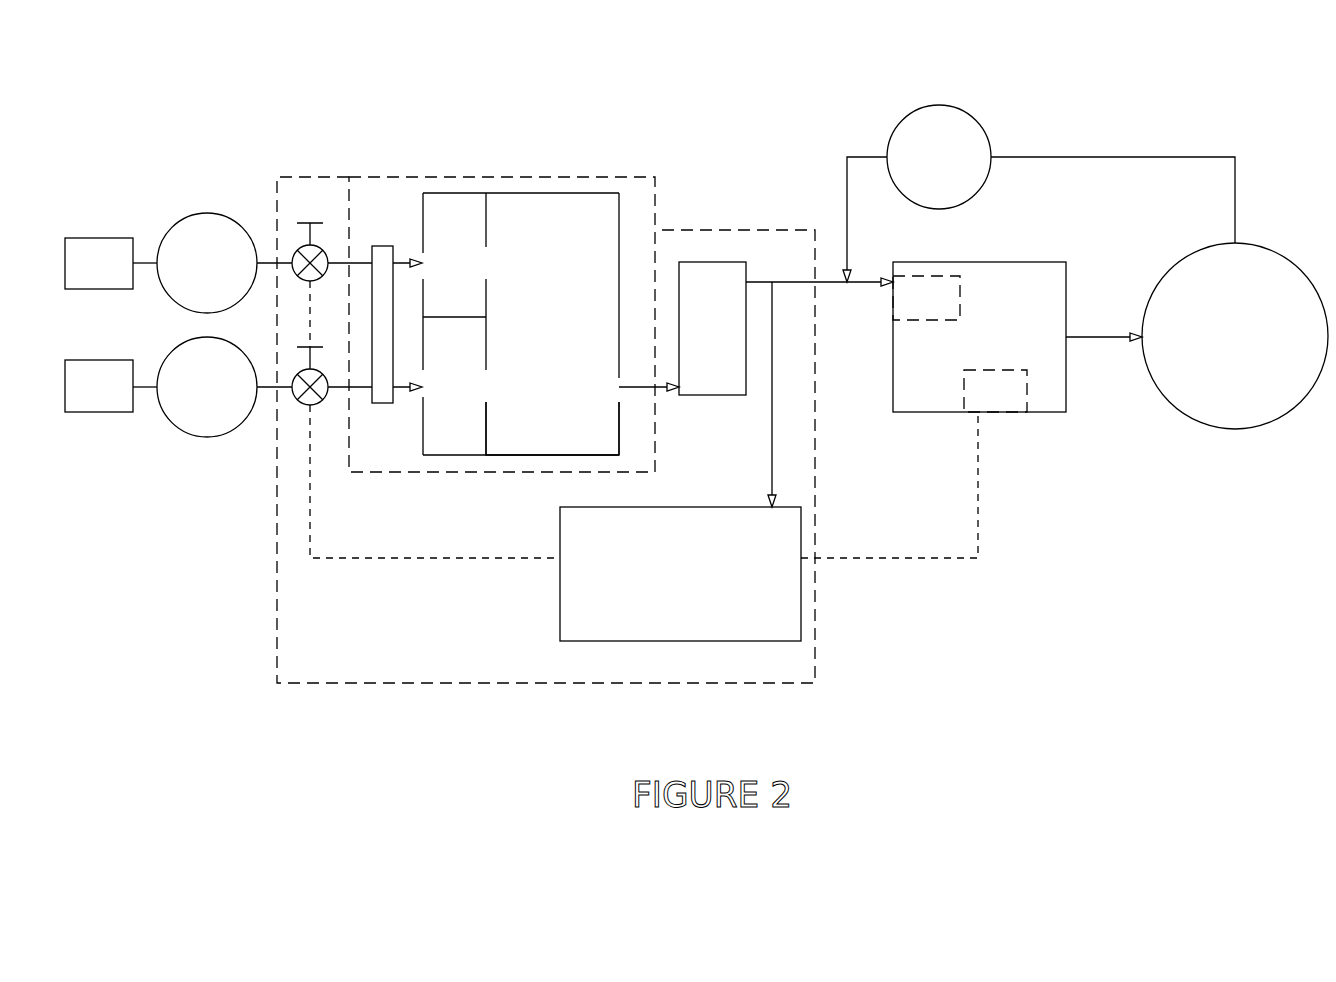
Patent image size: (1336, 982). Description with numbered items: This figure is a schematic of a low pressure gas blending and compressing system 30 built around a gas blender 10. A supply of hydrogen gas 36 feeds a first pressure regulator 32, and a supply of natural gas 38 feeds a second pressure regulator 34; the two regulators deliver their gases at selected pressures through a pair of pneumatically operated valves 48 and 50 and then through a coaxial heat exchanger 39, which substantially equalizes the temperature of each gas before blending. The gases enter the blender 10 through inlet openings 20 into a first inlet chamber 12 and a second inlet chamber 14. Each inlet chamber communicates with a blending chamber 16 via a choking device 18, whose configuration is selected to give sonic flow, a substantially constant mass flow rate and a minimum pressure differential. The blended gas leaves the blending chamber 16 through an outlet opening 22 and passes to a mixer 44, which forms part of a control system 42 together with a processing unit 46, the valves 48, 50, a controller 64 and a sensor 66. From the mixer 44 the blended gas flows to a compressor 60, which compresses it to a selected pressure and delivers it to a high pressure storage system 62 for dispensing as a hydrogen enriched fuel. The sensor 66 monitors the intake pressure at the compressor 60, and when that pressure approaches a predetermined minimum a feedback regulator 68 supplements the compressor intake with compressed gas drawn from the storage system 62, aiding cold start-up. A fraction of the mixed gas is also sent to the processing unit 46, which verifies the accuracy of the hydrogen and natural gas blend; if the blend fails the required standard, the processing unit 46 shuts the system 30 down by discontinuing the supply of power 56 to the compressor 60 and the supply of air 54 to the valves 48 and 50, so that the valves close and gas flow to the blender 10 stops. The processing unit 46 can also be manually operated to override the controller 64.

The gas blender 10 is at (616, 132).
The first inlet chamber 12 is at (445, 203).
The second inlet chamber 14 is at (455, 437).
The blending chamber 16 is at (600, 223).
The choking device 18 is at (487, 265).
The inlet opening 20 is at (423, 253).
The outlet opening 22 is at (618, 380).
The low pressure gas blending and compressing system 30 is at (1110, 654).
The first pressure regulator 32 is at (200, 222).
The second pressure regulator 34 is at (193, 422).
The supply of hydrogen gas 36 is at (113, 248).
The supply of natural gas 38 is at (113, 400).
The coaxial heat exchanger 39 is at (383, 243).
The control system 42 is at (282, 690).
The mixer 44 is at (723, 273).
The processing unit 46 is at (782, 580).
The pneumatically operated valve 48 is at (307, 222).
The pneumatically operated valve 50 is at (298, 348).
The supply of air 54 is at (477, 560).
The supply of power 56 is at (902, 558).
The compressor 60 is at (1020, 288).
The high pressure storage system 62 is at (1263, 275).
The controller 64 is at (1013, 400).
The sensor 66 is at (907, 311).
The feedback regulator 68 is at (963, 132).